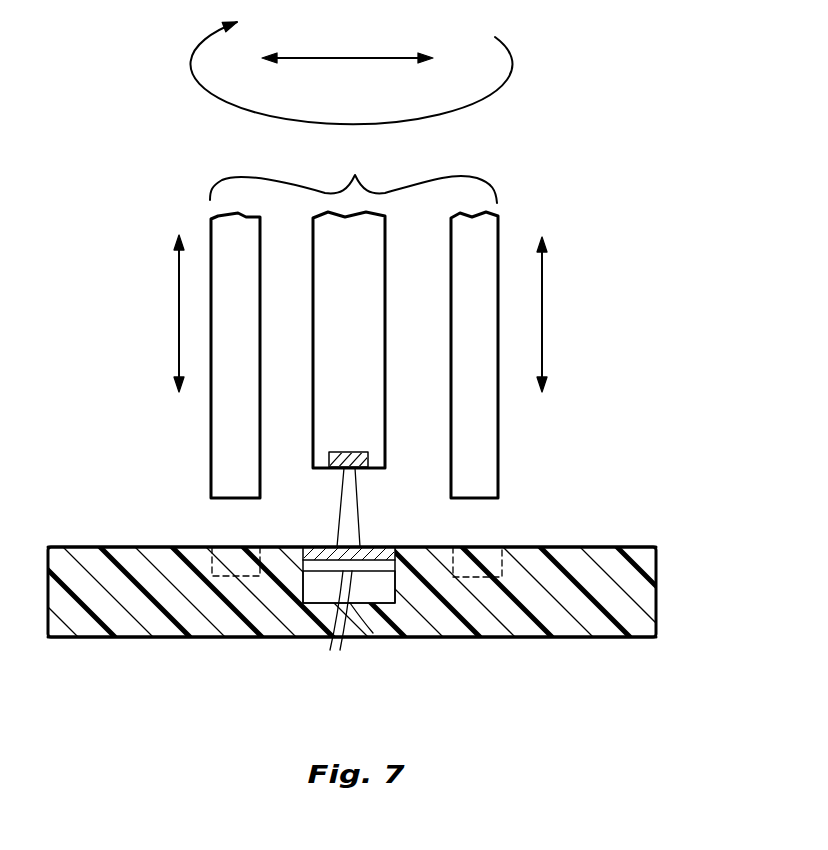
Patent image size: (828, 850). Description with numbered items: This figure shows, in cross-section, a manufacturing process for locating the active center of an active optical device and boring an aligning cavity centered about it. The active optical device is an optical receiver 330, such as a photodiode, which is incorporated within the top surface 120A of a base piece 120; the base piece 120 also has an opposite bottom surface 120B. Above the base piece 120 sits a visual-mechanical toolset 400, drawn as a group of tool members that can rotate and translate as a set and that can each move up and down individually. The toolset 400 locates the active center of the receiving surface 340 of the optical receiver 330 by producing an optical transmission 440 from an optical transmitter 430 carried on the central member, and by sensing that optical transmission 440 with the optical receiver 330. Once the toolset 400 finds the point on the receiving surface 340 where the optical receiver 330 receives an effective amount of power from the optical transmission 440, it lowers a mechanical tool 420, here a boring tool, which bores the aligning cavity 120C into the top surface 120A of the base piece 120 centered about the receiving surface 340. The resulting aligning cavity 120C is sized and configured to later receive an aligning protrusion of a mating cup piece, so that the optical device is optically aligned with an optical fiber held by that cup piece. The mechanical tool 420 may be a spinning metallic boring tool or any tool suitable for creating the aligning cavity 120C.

The visual-mechanical toolset 400 is at (404, 318).
The mechanical tool 420 is at (487, 450).
The optical transmitter 430 is at (356, 438).
The optical transmission 440 is at (358, 500).
The base piece 120 is at (657, 577).
The top surface 120A is at (568, 547).
The bottom surface 120B is at (575, 637).
The aligning cavity 120C is at (485, 547).
The optical receiver 330 is at (363, 607).
The receiving surface 340 is at (318, 608).